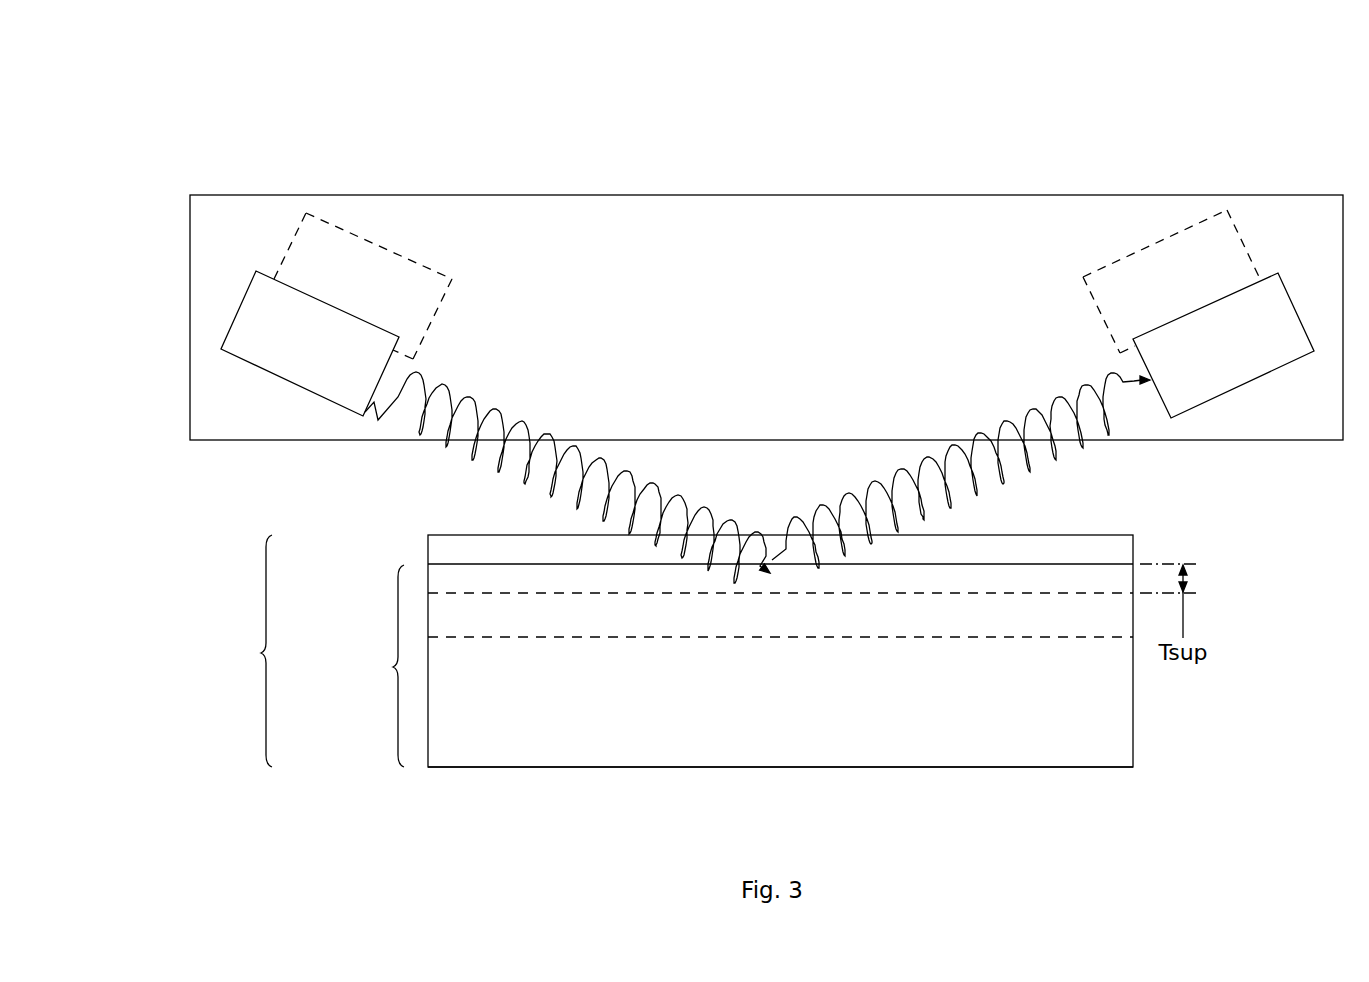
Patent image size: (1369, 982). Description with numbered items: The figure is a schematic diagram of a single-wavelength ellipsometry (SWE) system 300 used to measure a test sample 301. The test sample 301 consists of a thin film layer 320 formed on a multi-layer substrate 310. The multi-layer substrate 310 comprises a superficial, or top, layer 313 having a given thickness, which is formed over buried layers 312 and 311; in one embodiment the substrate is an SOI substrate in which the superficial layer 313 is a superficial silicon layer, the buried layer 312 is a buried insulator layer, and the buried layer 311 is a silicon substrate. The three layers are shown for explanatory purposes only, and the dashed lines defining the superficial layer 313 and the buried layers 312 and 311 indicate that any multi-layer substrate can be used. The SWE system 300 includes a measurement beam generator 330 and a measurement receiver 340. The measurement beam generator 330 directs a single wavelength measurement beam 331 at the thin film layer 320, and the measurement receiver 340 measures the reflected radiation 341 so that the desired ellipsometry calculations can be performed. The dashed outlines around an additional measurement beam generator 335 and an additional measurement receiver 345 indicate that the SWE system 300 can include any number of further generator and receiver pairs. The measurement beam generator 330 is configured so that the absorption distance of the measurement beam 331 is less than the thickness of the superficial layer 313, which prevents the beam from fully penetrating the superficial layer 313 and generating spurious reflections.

The SWE system 300 is at (200, 100).
The measurement beam generator 330 is at (281, 350).
The additional measurement beam generator 335 is at (341, 291).
The measurement receiver 340 is at (1207, 353).
The additional measurement receiver 345 is at (1163, 294).
The measurement beam 331 is at (478, 465).
The reflected light beam 341 is at (1025, 460).
The thin film layer 320 is at (1133, 542).
The multi-layer substrate 310 is at (373, 666).
The superficial layer 313 is at (436, 591).
The buried layer 312 is at (436, 626).
The buried layer 311 is at (436, 751).
The test sample 301 is at (242, 651).